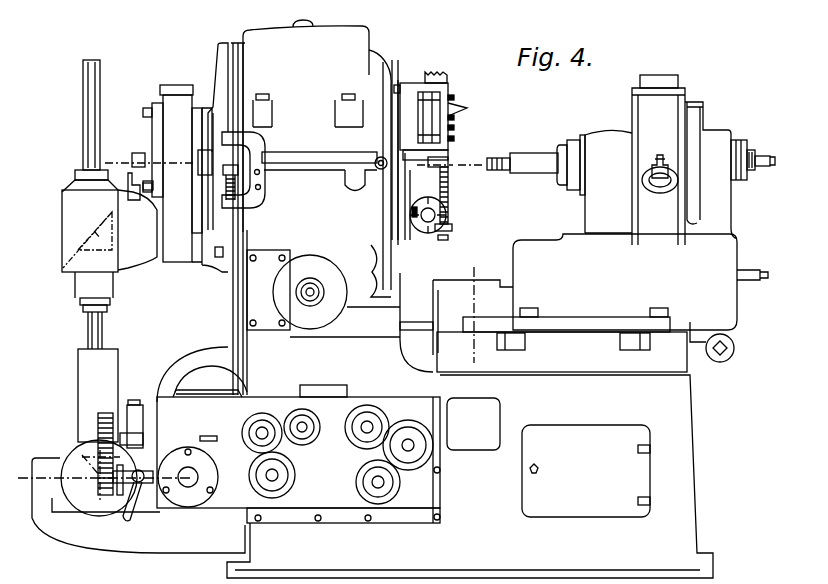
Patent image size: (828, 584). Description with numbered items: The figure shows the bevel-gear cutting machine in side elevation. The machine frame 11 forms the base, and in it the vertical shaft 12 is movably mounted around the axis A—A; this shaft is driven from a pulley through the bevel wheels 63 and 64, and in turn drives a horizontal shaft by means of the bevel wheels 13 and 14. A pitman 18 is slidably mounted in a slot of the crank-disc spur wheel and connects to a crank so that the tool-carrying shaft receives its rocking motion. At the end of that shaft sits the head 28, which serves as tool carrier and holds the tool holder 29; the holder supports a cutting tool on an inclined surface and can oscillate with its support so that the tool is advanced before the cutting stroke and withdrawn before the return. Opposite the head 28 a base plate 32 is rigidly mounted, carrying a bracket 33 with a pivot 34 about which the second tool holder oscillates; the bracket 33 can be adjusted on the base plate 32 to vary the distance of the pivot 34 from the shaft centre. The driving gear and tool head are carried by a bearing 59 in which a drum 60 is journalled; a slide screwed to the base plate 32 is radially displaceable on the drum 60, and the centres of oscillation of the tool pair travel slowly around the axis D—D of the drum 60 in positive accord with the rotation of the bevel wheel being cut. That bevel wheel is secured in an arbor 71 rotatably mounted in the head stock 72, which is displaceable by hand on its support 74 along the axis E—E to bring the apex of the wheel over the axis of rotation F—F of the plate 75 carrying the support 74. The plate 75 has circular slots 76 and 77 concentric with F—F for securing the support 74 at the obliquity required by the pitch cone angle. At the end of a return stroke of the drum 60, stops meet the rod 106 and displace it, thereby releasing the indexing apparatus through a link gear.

The machine frame 11 is at (470, 476).
The vertical shaft 12 is at (104, 331).
The bevel wheel 13 is at (63, 268).
The bevel wheel 14 is at (110, 214).
The pitman 18 is at (152, 133).
The head 28 is at (410, 84).
The tool holder 29 is at (467, 108).
The base plate 32 is at (396, 233).
The bracket 33 is at (450, 188).
The pivot 34 is at (452, 165).
The bearing 59 is at (355, 53).
The drum 60 is at (378, 262).
The bevel wheel 63 is at (120, 495).
The bevel wheel 64 is at (82, 455).
The arbor 71 is at (527, 158).
The head stock 72 is at (597, 130).
The support 74 is at (600, 303).
The plate 75 is at (585, 340).
The circular slot 76 is at (510, 353).
The circular slot 77 is at (638, 352).
The rod 106 is at (231, 317).